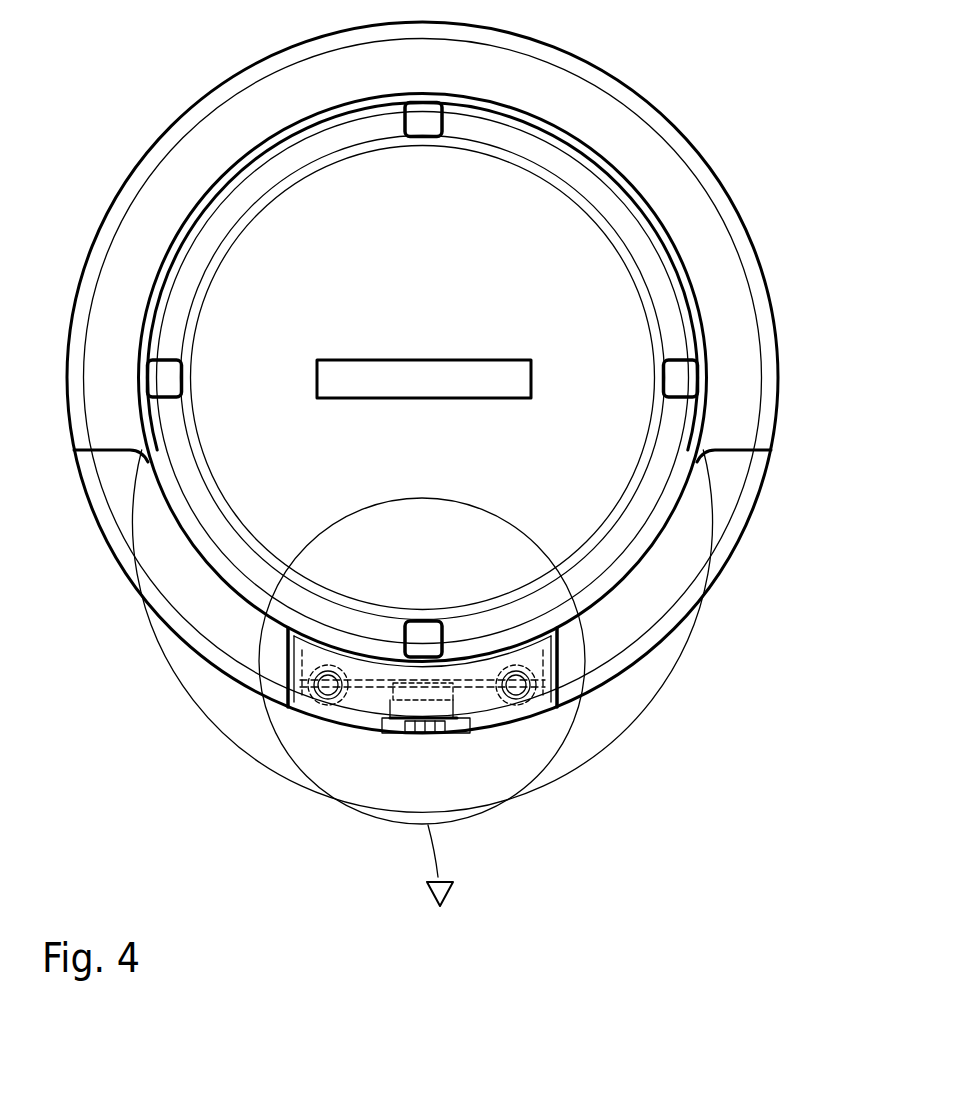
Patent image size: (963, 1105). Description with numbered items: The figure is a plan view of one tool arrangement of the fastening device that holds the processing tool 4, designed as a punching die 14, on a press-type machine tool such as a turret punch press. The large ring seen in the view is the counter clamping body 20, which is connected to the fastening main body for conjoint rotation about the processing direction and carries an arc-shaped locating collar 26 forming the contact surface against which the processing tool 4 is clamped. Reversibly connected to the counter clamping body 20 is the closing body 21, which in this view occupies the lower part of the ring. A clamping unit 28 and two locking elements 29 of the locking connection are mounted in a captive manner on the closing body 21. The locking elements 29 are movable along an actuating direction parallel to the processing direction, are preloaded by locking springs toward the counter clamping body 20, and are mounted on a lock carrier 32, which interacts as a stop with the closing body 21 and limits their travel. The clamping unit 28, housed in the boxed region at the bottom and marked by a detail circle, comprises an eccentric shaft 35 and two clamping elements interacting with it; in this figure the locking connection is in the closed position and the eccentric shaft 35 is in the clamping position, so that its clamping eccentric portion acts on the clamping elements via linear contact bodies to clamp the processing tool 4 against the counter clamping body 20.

The counter clamping body 20 is at (781, 316).
The closing body 21 is at (698, 547).
The locating collar 26 is at (738, 435).
The processing tool 4 is at (320, 570).
The punching die 14 is at (423, 545).
The clamping unit 28 is at (345, 735).
The locking elements 29 is at (330, 684).
The lock carrier 32 is at (507, 717).
The eccentric shaft 35 is at (398, 733).